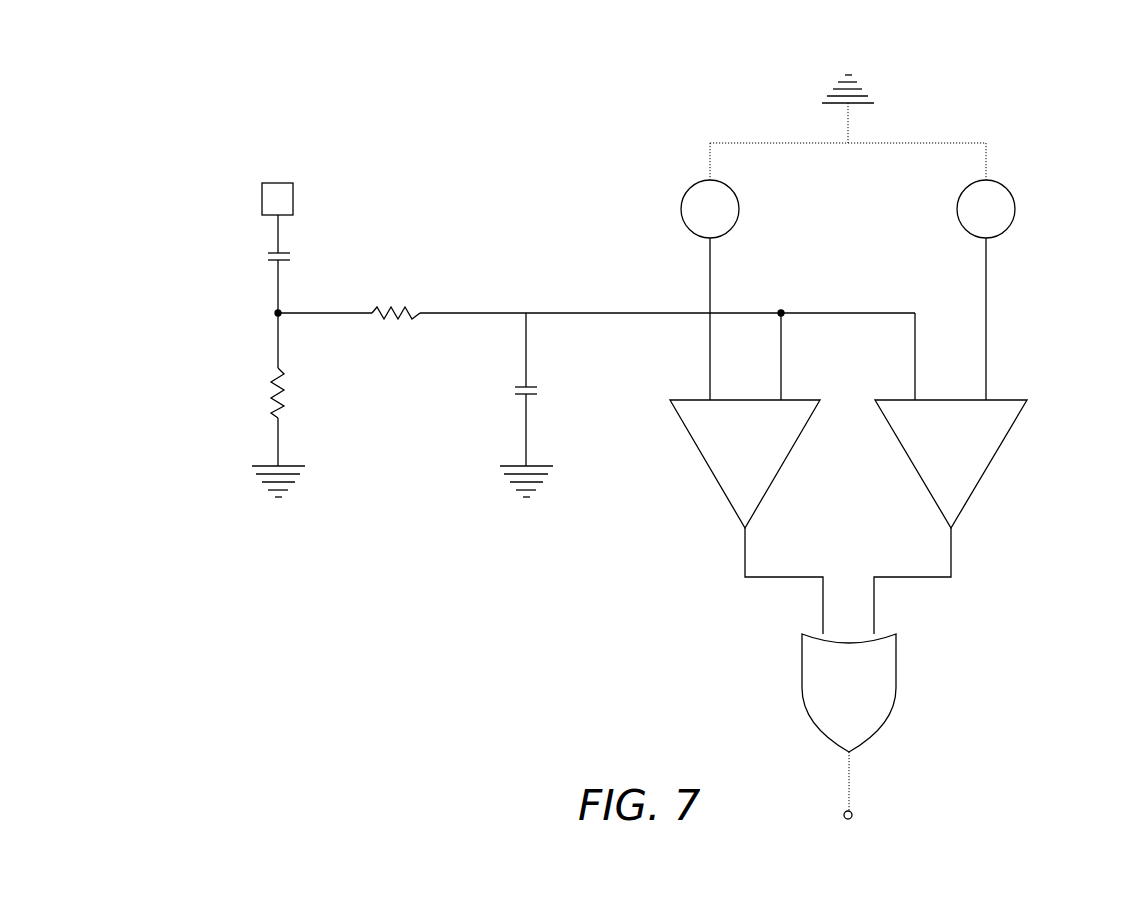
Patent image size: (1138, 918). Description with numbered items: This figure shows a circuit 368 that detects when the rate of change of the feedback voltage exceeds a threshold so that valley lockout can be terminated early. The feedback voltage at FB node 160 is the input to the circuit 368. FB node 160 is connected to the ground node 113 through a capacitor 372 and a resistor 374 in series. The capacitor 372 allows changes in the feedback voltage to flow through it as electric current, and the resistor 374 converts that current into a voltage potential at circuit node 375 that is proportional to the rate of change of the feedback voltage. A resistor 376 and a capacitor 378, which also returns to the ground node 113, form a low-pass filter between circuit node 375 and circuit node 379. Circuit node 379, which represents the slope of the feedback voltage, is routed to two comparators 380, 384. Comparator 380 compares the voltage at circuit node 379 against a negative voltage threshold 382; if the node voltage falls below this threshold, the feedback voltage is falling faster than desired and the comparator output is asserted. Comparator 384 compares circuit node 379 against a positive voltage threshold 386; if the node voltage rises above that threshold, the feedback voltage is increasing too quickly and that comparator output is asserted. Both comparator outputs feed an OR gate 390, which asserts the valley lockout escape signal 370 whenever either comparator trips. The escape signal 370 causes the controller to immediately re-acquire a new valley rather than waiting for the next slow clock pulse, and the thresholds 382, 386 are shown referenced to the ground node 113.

The ground node 113 is at (263, 492).
The FB node 160 is at (262, 202).
The circuit 368 is at (1003, 106).
The valley lockout escape signal 370 is at (853, 815).
The capacitor 372 is at (287, 255).
The resistor 374 is at (272, 393).
The circuit node 375 is at (275, 313).
The resistor 376 is at (397, 322).
The capacitor 378 is at (531, 388).
The circuit node 379 is at (783, 311).
The comparator 380 is at (708, 472).
The negative voltage threshold 382 is at (680, 208).
The comparator 384 is at (990, 470).
The positive voltage threshold 386 is at (1016, 209).
The OR gate 390 is at (898, 643).